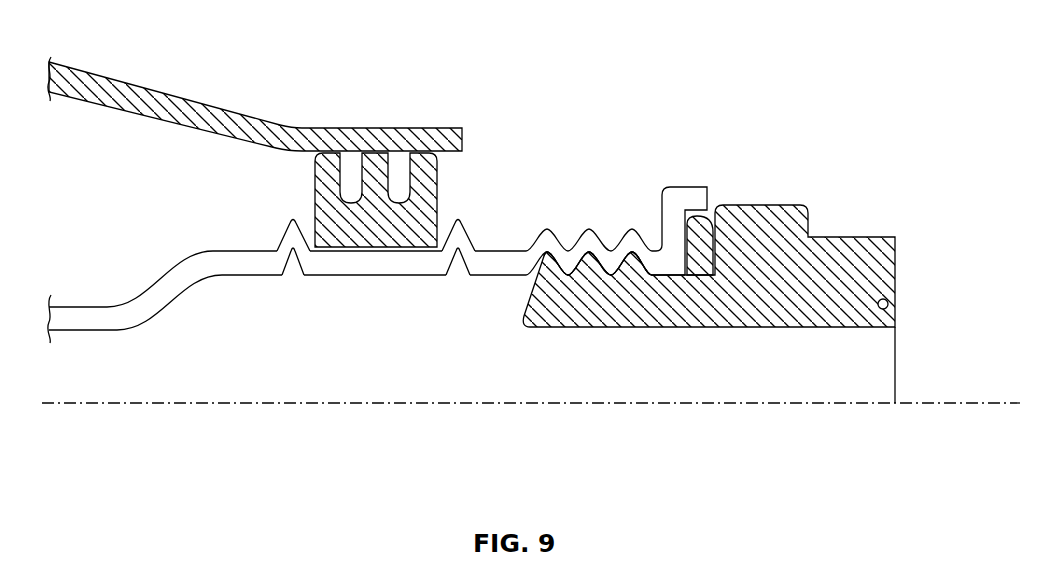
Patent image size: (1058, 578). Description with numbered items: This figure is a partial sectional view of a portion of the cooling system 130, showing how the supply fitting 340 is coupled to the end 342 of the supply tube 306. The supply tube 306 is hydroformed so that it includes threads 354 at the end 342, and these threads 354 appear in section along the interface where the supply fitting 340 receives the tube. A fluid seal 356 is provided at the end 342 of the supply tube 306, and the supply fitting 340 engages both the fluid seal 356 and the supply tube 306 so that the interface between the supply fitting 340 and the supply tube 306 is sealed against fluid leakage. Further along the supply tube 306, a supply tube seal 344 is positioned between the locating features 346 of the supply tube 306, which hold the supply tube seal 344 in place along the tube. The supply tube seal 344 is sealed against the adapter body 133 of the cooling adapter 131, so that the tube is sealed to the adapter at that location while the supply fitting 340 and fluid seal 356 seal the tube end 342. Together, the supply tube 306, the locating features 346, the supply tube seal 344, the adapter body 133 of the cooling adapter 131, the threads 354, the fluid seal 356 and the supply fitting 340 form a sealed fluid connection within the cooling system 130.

The cooling system 130 is at (590, 82).
The cooling adapter 131 is at (448, 101).
The adapter body 133 is at (407, 141).
The supply tube 306 is at (168, 297).
The supply fitting 340 is at (826, 255).
The end of the supply tube 342 is at (687, 193).
The supply tube seal 344 is at (428, 192).
The locating features 346 is at (285, 237).
The threads 354 is at (586, 272).
The fluid seal 356 is at (702, 235).